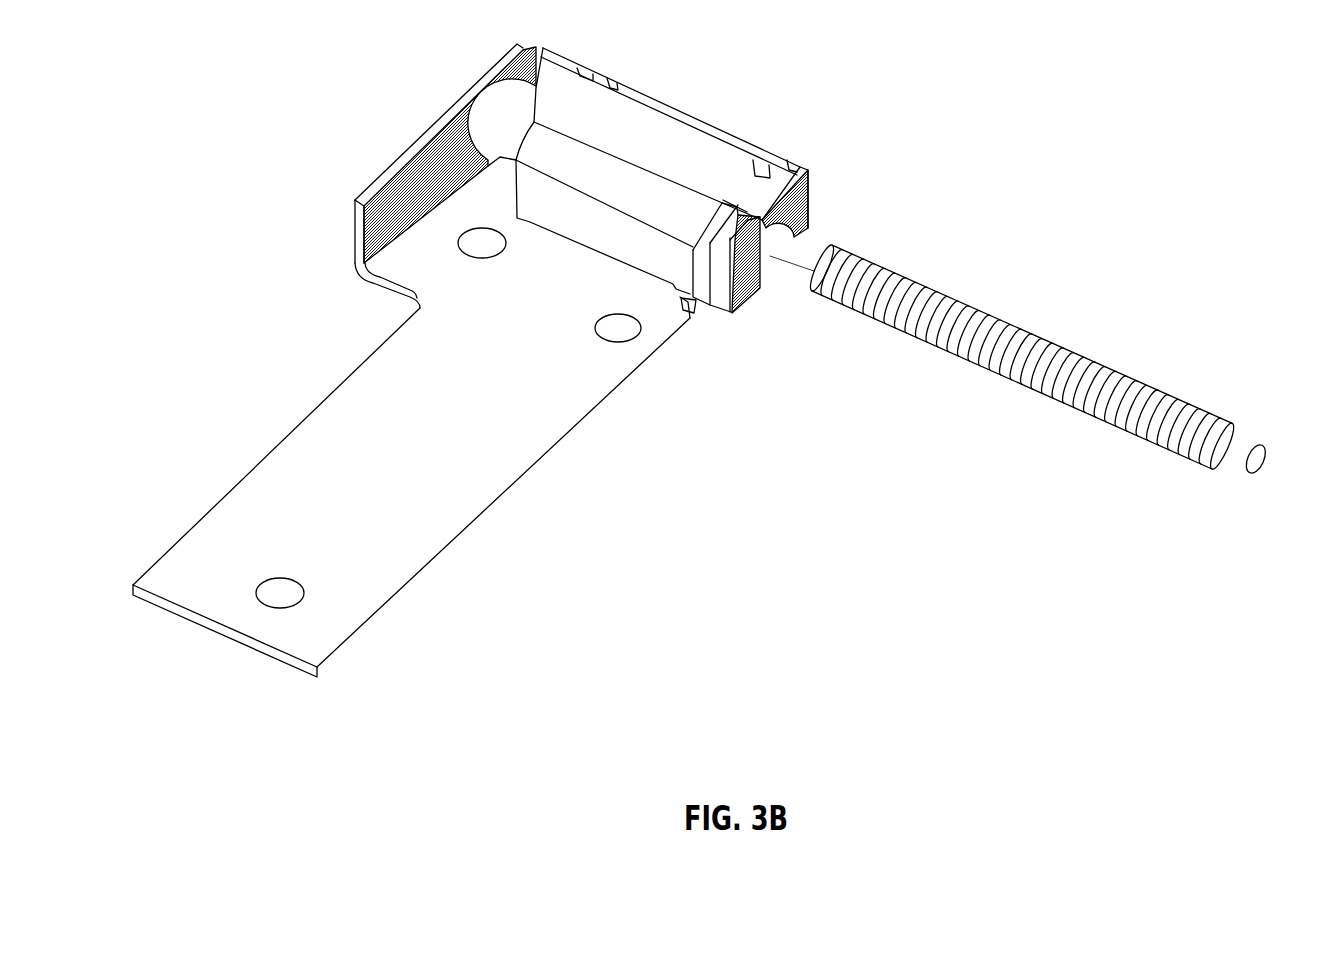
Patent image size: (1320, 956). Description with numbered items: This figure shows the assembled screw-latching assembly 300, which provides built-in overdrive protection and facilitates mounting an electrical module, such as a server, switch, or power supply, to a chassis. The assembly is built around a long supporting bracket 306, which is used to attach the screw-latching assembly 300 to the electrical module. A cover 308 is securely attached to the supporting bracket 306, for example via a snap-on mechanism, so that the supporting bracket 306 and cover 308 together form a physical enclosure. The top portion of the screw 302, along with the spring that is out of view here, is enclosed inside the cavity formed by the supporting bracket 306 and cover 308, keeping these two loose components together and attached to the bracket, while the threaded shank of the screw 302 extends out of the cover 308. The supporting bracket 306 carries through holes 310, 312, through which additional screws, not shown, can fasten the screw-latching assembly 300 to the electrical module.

The screw-latching assembly 300 is at (976, 130).
The screw 302 is at (1148, 428).
The supporting bracket 306 is at (390, 367).
The cover 308 is at (710, 150).
The hole 310 is at (283, 593).
The hole 312 is at (622, 335).